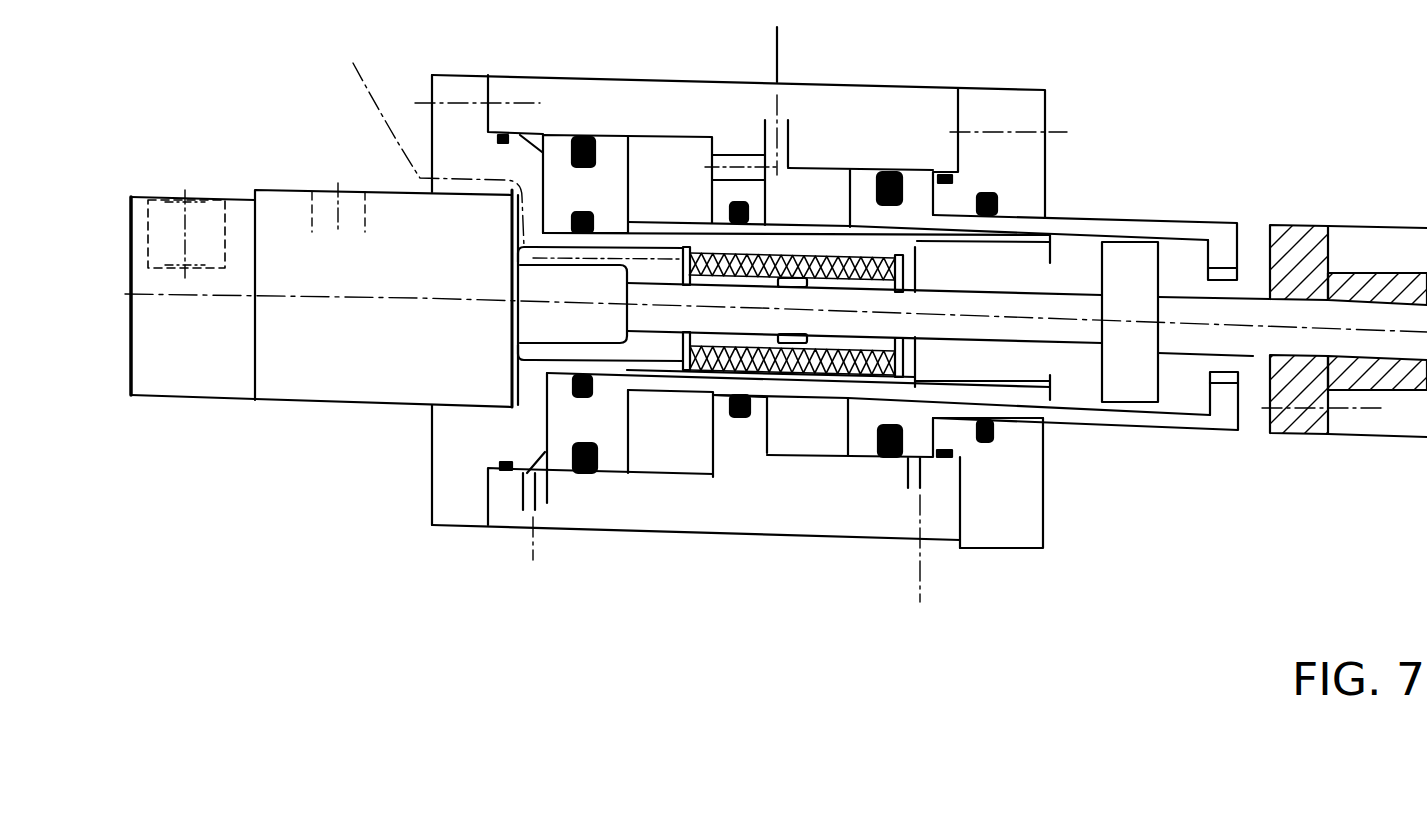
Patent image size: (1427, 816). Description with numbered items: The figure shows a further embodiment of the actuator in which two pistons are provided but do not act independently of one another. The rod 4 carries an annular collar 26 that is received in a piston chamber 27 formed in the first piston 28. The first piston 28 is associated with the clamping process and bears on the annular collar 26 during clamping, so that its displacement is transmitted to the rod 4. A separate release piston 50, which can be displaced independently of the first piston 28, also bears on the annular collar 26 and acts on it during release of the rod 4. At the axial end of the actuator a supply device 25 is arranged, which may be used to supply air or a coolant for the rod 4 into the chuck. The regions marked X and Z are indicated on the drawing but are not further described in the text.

The rod 4 is at (1255, 340).
The supply device 25 is at (318, 375).
The annular collar 26 is at (1140, 273).
The piston chamber 27 is at (1193, 273).
The first piston 28 is at (917, 438).
The release piston 50 is at (597, 475).
The chamber X is at (865, 437).
The chamber Z is at (620, 428).